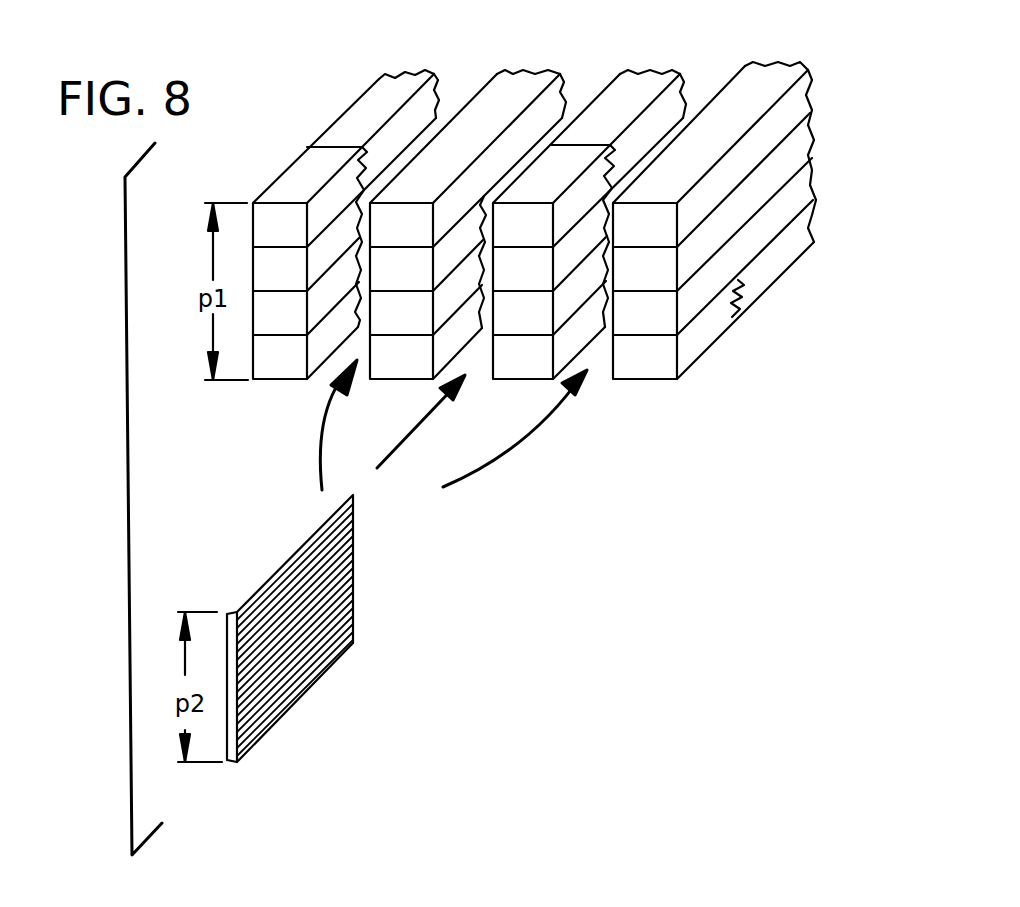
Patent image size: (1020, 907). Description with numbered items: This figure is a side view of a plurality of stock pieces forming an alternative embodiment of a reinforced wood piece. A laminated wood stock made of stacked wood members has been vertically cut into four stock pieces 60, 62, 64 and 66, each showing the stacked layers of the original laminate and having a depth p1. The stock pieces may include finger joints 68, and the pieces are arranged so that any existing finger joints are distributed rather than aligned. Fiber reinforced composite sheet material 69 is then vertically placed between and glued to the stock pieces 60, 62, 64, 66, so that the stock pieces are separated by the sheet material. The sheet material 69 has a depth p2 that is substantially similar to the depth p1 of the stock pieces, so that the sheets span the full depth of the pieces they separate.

The stock piece 60 is at (283, 372).
The stock piece 62 is at (403, 368).
The stock piece 64 is at (526, 368).
The stock piece 66 is at (645, 370).
The finger joint 68 is at (374, 138).
The fiber reinforced composite sheet material 69 is at (303, 643).